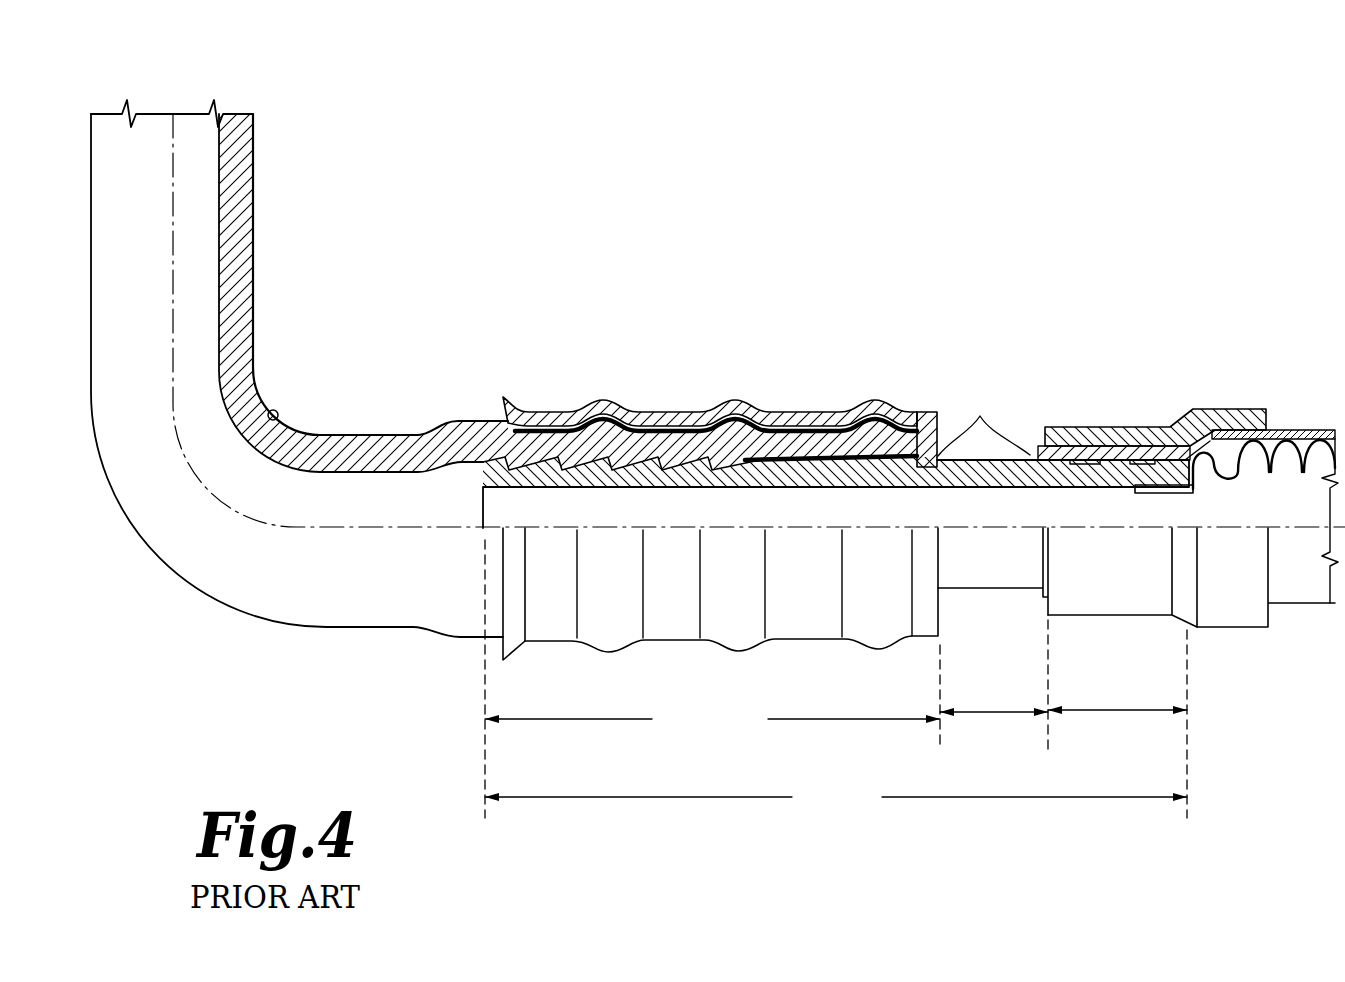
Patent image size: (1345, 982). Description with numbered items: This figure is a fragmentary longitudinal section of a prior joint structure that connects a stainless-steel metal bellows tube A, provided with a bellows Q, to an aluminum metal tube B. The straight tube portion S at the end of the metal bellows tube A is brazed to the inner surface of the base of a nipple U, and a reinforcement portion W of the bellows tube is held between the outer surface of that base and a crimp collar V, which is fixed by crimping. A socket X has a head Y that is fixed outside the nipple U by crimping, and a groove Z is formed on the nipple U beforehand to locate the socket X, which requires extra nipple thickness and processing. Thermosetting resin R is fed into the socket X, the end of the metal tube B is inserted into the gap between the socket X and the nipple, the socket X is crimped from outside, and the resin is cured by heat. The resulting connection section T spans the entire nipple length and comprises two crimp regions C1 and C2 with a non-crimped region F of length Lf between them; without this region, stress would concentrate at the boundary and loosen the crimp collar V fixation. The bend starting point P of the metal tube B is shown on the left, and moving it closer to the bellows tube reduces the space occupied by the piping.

The bend starting point P is at (278, 409).
The metal tube B is at (426, 396).
The groove Z is at (676, 390).
The thermosetting resin R is at (797, 455).
The socket X is at (918, 432).
The head of socket Y is at (916, 489).
The nipple U is at (983, 489).
The crimp collar V is at (1067, 426).
The reinforcement portion W is at (1140, 455).
The metal bellows tube A is at (1226, 381).
The bellows Q is at (1228, 482).
The straight tube portion S is at (1140, 494).
The length of non-crimped region Lf is at (980, 416).
The crimp region C2 is at (712, 679).
The non-crimped region F is at (994, 699).
The crimp region C1 is at (1117, 686).
The connection section T is at (836, 724).